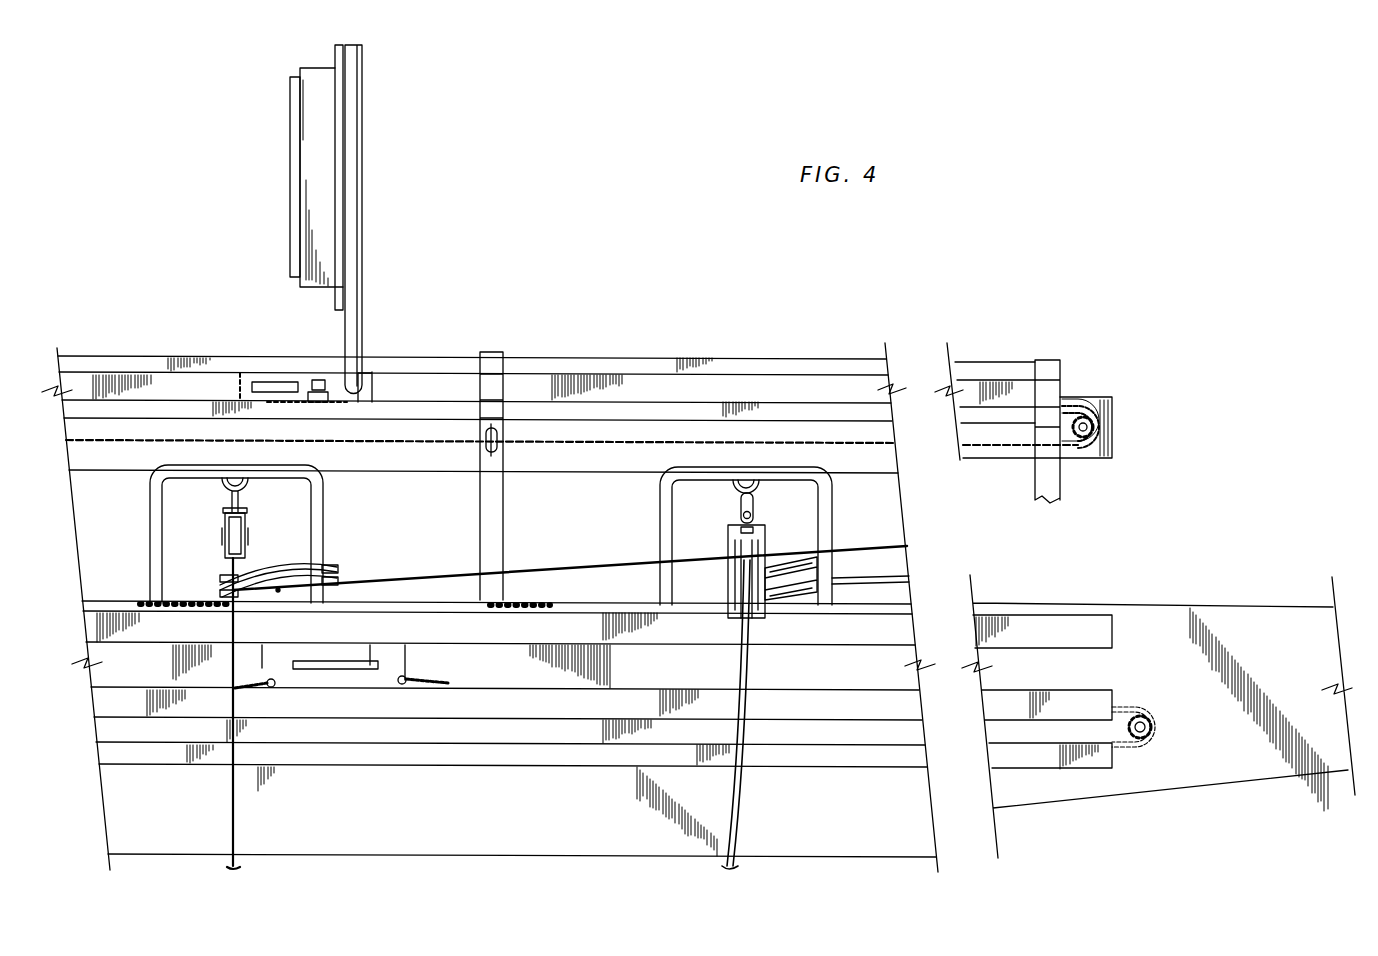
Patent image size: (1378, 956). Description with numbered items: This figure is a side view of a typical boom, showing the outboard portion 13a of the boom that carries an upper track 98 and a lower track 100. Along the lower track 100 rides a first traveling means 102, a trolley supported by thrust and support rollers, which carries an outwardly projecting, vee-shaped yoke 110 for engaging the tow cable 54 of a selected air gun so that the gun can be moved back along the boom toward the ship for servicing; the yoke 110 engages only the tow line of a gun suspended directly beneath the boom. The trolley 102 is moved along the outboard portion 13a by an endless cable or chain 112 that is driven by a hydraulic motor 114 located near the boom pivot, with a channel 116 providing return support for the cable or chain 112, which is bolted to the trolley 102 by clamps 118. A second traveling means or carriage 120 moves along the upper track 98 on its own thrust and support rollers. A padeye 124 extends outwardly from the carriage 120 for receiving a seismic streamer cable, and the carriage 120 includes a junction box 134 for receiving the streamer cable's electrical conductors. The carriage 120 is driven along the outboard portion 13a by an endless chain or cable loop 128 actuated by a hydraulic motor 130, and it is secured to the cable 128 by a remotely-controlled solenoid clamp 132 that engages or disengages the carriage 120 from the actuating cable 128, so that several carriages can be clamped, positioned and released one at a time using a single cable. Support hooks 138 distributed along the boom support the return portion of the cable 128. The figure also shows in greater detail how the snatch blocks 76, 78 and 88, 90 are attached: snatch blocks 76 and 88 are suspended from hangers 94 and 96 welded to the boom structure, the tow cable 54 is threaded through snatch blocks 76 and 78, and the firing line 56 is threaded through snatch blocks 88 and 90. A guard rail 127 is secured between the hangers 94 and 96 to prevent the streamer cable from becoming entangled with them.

The outboard portion of boom 13a is at (632, 282).
The tow cable 54 is at (576, 572).
The firing line 56 is at (856, 592).
The snatch block 76 is at (223, 533).
The snatch block 78 is at (277, 562).
The snatch block 88 is at (730, 550).
The snatch block 90 is at (788, 562).
The hanger 94 is at (323, 516).
The hanger 96 is at (833, 505).
The upper track 98 is at (447, 365).
The lower track 100 is at (575, 628).
The first traveling means 102 is at (370, 648).
The vee-shaped yoke 110 is at (340, 670).
The endless cable or chain 112 is at (447, 684).
The hydraulic motor 114 is at (1150, 743).
The channel 116 is at (435, 753).
The clamps 118 is at (270, 688).
The second traveling means or carriage 120 is at (372, 376).
The padeye 124 is at (258, 380).
The guard rail 127 is at (580, 473).
The endless chain or cable loop 128 is at (385, 396).
The hydraulic motor 130 is at (1093, 445).
The remotely-controlled solenoid clamp 132 is at (318, 380).
The junction box 134 is at (292, 160).
The support hooks 138 is at (500, 446).